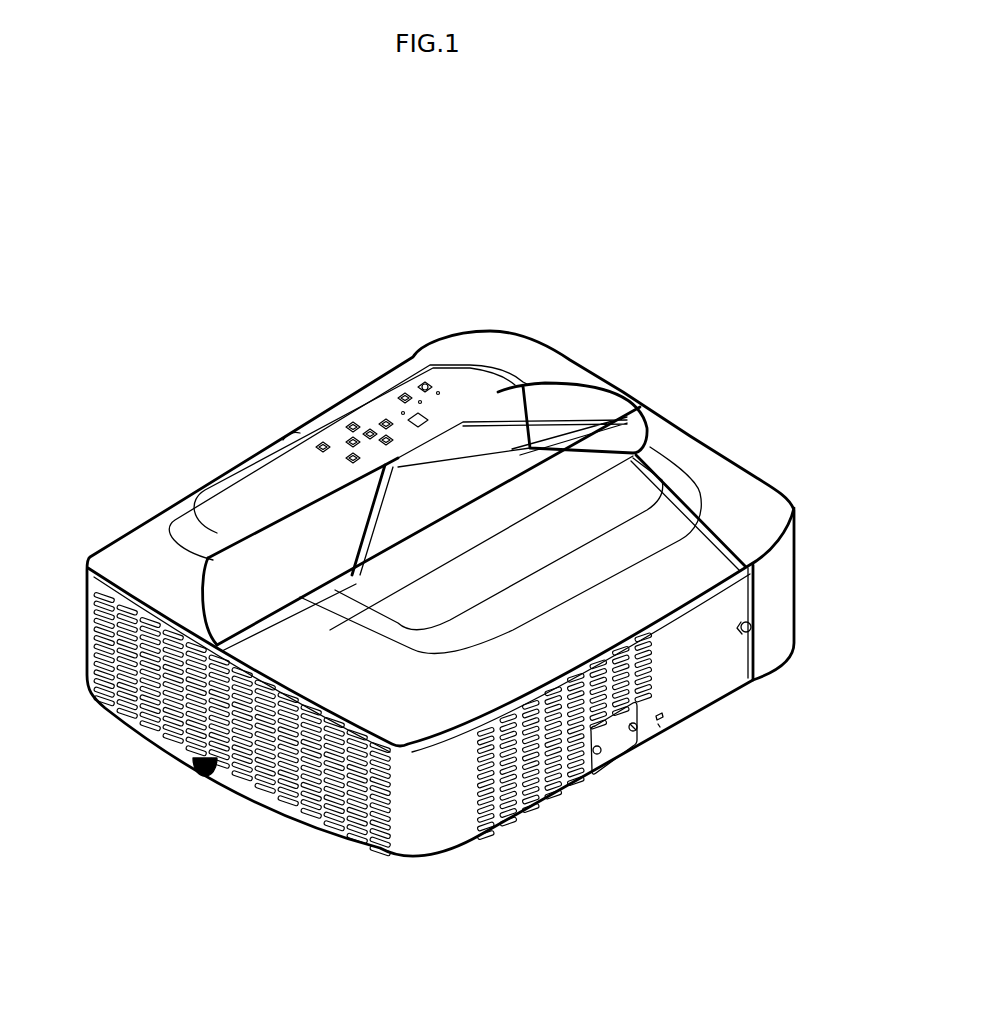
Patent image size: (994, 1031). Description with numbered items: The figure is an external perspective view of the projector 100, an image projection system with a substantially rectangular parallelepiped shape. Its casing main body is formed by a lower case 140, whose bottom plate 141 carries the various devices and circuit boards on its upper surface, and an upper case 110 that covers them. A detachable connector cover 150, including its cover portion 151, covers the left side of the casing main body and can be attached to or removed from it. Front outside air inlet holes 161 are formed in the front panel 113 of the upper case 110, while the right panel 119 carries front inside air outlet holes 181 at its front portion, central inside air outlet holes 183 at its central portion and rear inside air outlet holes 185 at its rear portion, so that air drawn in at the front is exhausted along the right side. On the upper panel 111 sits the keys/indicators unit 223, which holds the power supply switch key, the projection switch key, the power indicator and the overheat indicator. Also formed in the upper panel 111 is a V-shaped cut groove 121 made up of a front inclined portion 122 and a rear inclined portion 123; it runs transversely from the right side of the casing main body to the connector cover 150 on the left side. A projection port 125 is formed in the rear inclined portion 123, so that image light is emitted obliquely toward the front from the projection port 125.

The projector 100 is at (443, 574).
The upper case 110 is at (443, 620).
The upper panel 111 is at (633, 482).
The front panel 113 is at (692, 670).
The right panel 119 is at (237, 775).
The V-shaped cut groove 121 is at (382, 459).
The front inclined portion 122 is at (333, 608).
The rear inclined portion 123 is at (318, 535).
The projection port 125 is at (430, 477).
The lower case 140 is at (440, 667).
The bottom plate 141 is at (407, 862).
The connector cover 150 is at (629, 404).
The cover top portion 151 is at (513, 363).
The front outside air inlet holes 161 is at (533, 793).
The front inside air outlet holes 181 is at (233, 771).
The central inside air outlet holes 183 is at (233, 751).
The rear inside air outlet holes 185 is at (130, 660).
The keys/indicators unit 223 is at (354, 425).